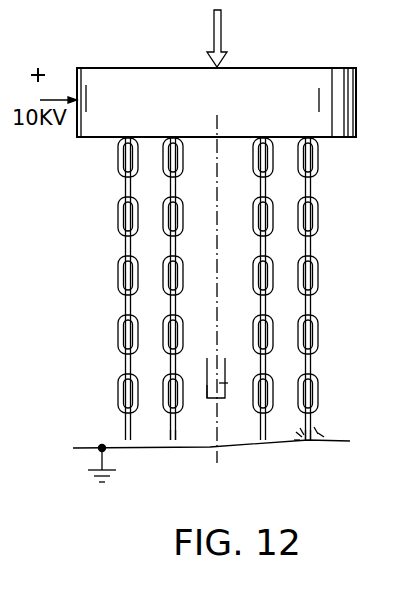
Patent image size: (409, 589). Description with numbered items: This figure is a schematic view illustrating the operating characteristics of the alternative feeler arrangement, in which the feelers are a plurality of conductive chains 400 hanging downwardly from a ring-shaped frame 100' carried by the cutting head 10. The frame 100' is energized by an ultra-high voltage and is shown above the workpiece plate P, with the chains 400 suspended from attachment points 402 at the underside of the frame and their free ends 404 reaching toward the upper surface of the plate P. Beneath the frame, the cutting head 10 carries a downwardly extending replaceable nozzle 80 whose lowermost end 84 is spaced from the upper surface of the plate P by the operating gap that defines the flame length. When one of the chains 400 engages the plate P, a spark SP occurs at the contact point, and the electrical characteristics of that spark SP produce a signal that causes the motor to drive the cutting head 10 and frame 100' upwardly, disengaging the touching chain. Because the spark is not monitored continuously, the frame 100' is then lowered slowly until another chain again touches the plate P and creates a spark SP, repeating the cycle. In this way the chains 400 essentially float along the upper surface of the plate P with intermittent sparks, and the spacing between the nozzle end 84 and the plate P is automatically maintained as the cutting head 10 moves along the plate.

The frame 100' is at (232, 71).
The conductive chains 400 is at (162, 273).
The chain attachment point 402 is at (312, 139).
The chain free ends 404 is at (173, 442).
The nozzle 80 is at (226, 387).
The lowermost end 84 is at (208, 402).
The plate P is at (90, 446).
The spark SP is at (320, 432).
The cutting head 10 is at (403, 111).